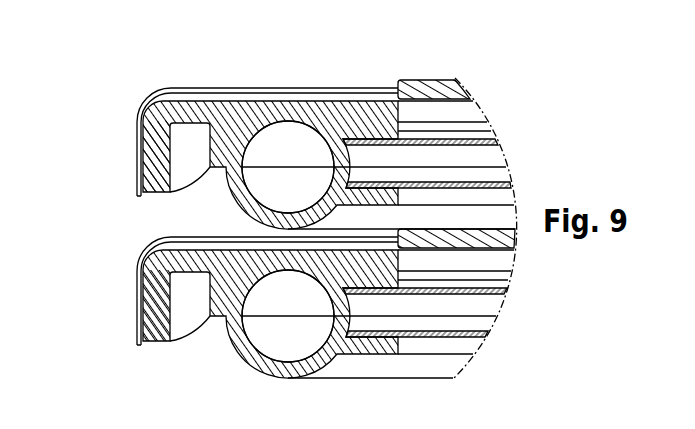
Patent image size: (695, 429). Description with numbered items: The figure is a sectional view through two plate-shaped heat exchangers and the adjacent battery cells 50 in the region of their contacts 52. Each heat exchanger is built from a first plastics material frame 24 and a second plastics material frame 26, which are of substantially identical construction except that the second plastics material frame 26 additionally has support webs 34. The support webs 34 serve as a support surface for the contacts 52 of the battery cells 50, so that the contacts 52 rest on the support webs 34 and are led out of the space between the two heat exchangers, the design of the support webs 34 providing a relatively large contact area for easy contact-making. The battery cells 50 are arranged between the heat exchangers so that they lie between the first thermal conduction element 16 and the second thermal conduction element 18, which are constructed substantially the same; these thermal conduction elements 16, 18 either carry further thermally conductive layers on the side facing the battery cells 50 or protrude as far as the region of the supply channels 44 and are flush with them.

The first thermal conduction element 16 is at (508, 192).
The second thermal conduction element 18 is at (487, 127).
The first plastics material frame 24 is at (236, 193).
The second plastics material frame 26 is at (216, 108).
The support web 34 is at (155, 148).
The supply channel 44 is at (273, 137).
The battery cell 50 is at (445, 82).
The contact 52 is at (333, 88).